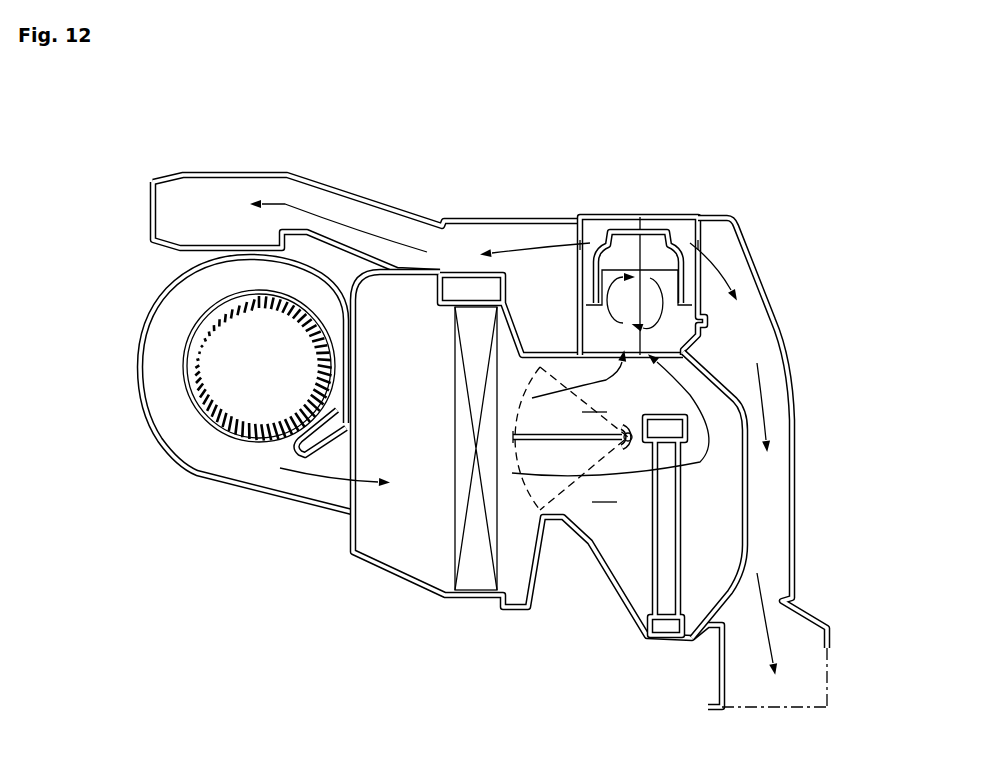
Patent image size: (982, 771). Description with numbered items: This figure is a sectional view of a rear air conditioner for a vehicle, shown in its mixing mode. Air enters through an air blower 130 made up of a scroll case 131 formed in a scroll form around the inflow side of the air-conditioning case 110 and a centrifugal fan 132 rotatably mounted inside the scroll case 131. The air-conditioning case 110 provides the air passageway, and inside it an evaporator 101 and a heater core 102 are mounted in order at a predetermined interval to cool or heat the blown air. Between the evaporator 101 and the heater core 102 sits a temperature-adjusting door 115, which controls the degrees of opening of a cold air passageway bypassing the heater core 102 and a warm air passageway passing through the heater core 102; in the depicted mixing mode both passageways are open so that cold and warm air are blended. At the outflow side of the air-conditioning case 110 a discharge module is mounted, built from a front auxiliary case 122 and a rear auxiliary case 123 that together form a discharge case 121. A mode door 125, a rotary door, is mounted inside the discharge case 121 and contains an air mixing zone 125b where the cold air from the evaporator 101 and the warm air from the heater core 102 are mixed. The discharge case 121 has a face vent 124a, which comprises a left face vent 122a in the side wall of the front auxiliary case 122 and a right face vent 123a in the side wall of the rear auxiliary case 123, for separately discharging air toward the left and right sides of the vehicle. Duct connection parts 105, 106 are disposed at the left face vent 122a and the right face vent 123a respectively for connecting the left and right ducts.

The evaporator 101 is at (472, 578).
The heater core 102 is at (663, 627).
The duct connection part 105 is at (795, 490).
The duct connection part 106 is at (362, 199).
The air-conditioning case 110 is at (515, 610).
The temperature-adjusting door 115 is at (550, 457).
The discharge case 121 is at (675, 148).
The front auxiliary case 122 is at (668, 214).
The left face vent 122a is at (730, 228).
The rear auxiliary case 123 is at (618, 214).
The right face vent 123a is at (562, 232).
The face vent 124a is at (525, 156).
The mode door 125 is at (603, 214).
The air mixing zone 125b is at (705, 340).
The air blower 130 is at (135, 362).
The scroll case 131 is at (163, 443).
The centrifugal fan 132 is at (217, 430).